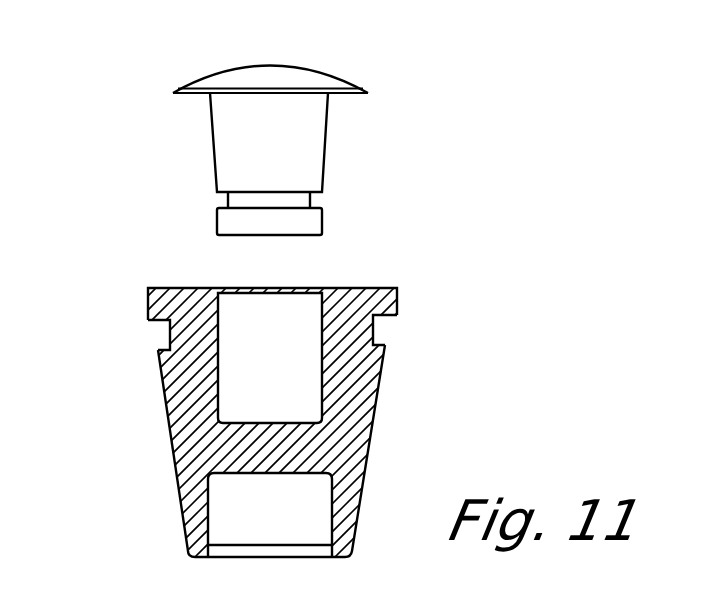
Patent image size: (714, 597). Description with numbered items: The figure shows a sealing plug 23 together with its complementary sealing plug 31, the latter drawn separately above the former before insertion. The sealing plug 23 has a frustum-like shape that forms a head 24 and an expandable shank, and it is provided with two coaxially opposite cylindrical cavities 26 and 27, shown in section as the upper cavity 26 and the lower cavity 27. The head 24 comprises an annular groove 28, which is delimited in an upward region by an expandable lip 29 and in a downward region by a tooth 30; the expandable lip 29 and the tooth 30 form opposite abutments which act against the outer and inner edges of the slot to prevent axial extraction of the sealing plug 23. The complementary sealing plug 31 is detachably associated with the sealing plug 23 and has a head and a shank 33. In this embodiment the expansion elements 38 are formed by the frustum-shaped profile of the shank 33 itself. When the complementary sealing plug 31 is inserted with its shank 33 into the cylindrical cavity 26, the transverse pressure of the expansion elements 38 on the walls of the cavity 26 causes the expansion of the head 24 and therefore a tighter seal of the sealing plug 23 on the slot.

The sealing plug 23 is at (395, 462).
The head 24 is at (153, 387).
The cylindrical cavity 26 is at (292, 375).
The cylindrical cavity 27 is at (284, 529).
The annular groove 28 is at (381, 332).
The expandable lip 29 is at (148, 301).
The tooth 30 is at (158, 357).
The complementary sealing plug 31 is at (368, 74).
The shank 33 is at (300, 222).
The expansion elements 38 is at (335, 148).